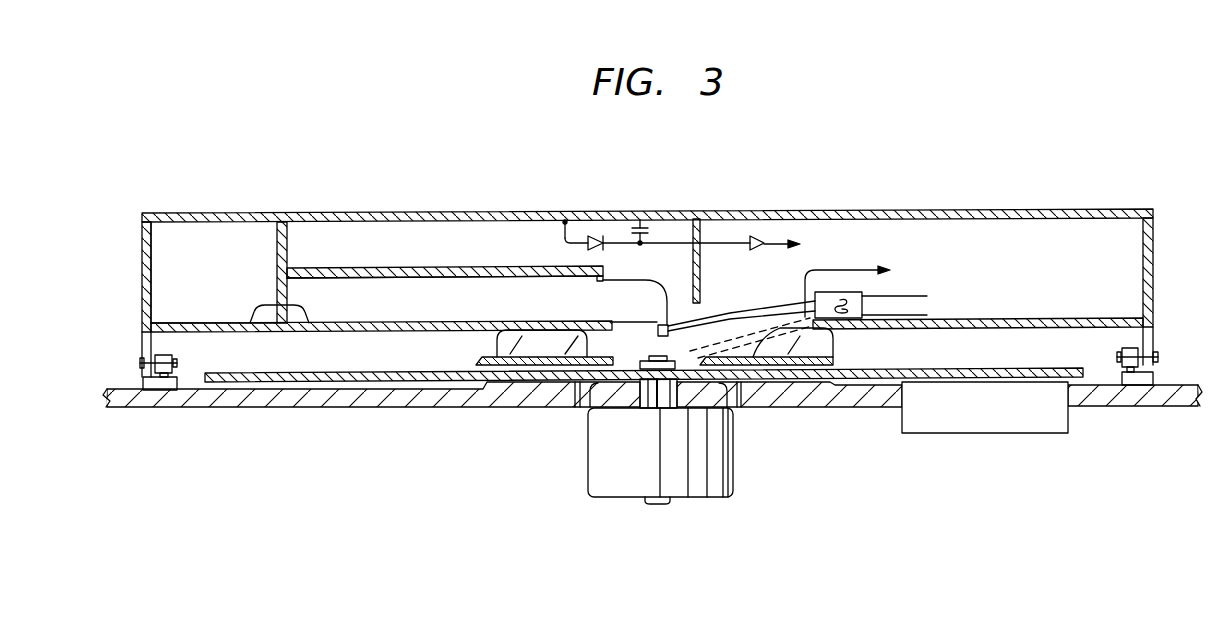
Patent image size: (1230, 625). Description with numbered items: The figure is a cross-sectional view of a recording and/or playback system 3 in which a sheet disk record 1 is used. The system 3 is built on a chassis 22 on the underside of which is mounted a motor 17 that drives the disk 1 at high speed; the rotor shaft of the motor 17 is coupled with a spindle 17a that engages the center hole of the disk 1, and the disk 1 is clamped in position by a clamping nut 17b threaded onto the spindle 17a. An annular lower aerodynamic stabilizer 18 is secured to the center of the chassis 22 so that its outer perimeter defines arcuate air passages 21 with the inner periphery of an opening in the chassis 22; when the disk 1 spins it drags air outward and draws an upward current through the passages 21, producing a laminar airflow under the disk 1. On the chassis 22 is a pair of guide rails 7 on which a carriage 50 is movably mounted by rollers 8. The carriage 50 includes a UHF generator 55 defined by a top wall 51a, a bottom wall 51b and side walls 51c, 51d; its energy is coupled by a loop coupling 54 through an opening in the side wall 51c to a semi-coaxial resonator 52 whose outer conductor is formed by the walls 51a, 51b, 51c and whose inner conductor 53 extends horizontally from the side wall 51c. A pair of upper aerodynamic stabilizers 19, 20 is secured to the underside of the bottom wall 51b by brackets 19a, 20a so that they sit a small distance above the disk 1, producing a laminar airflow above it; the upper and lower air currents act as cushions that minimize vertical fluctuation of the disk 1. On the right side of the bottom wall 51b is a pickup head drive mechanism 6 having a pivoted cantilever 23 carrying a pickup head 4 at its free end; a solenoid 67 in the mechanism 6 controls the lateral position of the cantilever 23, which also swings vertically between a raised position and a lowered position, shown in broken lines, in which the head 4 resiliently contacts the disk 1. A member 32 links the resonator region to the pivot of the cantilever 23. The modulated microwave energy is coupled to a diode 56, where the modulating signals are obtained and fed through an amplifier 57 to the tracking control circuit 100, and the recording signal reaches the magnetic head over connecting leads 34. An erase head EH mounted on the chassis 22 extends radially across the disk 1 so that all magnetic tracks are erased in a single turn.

The recording and/or playback system 3 is at (575, 155).
The carriage 50 is at (285, 212).
The top wall 51a is at (440, 198).
The bottom wall 51b is at (310, 332).
The side wall 51c is at (287, 258).
The side wall 51d is at (155, 302).
The semi-coaxial resonator 52 is at (436, 257).
The inner conductor 53 is at (443, 294).
The loop coupling 54 is at (258, 306).
The UHF generator 55 is at (240, 256).
The diode 56 is at (594, 238).
The amplifier 57 is at (757, 238).
The tracking control circuit 100 is at (803, 245).
The connecting member 32 is at (633, 280).
The pickup head 4 is at (668, 334).
The cantilever 23 is at (733, 315).
The pickup head drive mechanism 6 is at (833, 289).
The solenoid 67 is at (845, 309).
The connecting leads 34 is at (845, 268).
The clamping nut 17b is at (637, 356).
The bracket 20a is at (500, 344).
The upper aerodynamic stabilizer 20 is at (477, 364).
The bracket 19a is at (832, 345).
The upper aerodynamic stabilizer 19 is at (833, 362).
The disk record 1 is at (928, 368).
The chassis 22 is at (320, 410).
The arcuate air passages 21 is at (583, 405).
The lower aerodynamic stabilizer 18 is at (587, 407).
The motor 17 is at (687, 484).
The spindle 17a is at (657, 397).
The rollers 8 is at (172, 357).
The guide rails 7 is at (143, 384).
The erase head EH is at (985, 429).